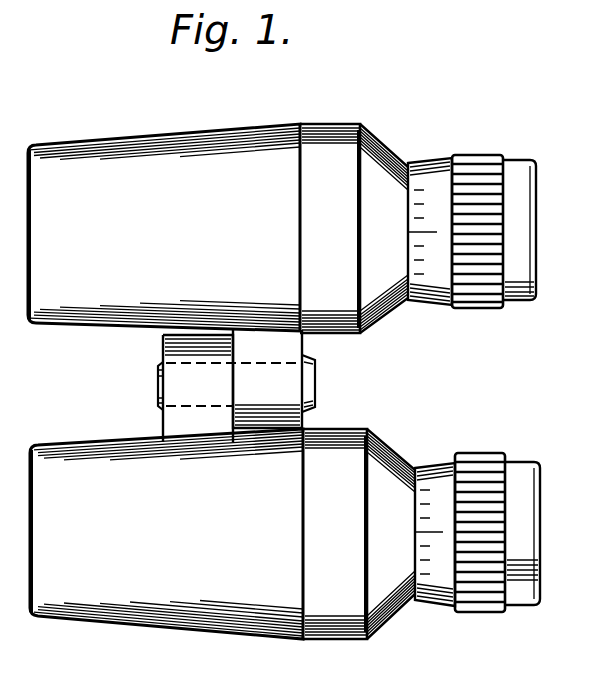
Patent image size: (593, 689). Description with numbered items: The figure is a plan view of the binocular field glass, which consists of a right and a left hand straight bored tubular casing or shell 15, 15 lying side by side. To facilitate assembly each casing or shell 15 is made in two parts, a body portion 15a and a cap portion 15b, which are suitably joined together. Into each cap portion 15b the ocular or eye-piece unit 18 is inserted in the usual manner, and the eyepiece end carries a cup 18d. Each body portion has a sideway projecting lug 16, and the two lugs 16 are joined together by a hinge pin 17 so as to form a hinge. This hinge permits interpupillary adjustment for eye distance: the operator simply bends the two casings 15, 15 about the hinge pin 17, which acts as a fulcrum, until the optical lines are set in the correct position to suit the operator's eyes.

The tubular casing or shell 15 is at (221, 378).
The body portion 15a is at (162, 133).
The cap portion 15b is at (353, 146).
The sideway projecting lug 16 is at (290, 347).
The hinge pin 17 is at (312, 392).
The ocular or eye-piece unit 18 is at (475, 393).
The eyepiece cup 18d is at (510, 306).